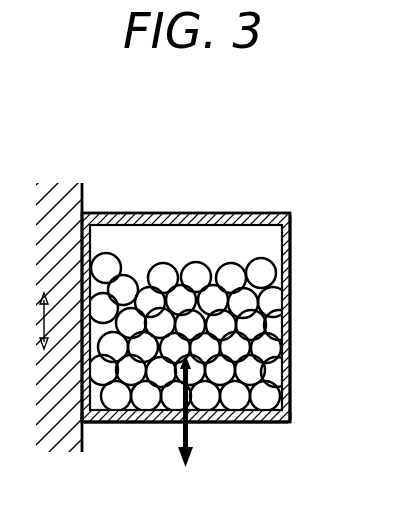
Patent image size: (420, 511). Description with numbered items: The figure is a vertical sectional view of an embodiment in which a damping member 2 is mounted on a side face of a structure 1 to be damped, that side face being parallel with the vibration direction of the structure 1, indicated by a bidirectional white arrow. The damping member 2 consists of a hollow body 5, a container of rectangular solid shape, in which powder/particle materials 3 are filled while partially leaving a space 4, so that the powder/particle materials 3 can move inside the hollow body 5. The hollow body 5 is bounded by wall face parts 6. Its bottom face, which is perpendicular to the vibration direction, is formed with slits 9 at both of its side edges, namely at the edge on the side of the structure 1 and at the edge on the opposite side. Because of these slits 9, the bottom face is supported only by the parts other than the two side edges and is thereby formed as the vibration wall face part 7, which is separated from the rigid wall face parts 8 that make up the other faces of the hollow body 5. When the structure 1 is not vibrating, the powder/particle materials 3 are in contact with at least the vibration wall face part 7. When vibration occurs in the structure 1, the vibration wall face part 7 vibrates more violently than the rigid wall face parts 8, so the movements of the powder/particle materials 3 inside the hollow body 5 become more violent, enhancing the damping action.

The structure to be damped 1 is at (83, 200).
The damping member 2 is at (284, 212).
The powder/particle materials 3 is at (234, 262).
The space 4 is at (160, 215).
The hollow body 5 is at (292, 313).
The wall face parts 6 is at (292, 247).
The vibration wall face part 7 is at (217, 418).
The rigid wall face parts 8 is at (292, 380).
The slits 9 is at (85, 420).